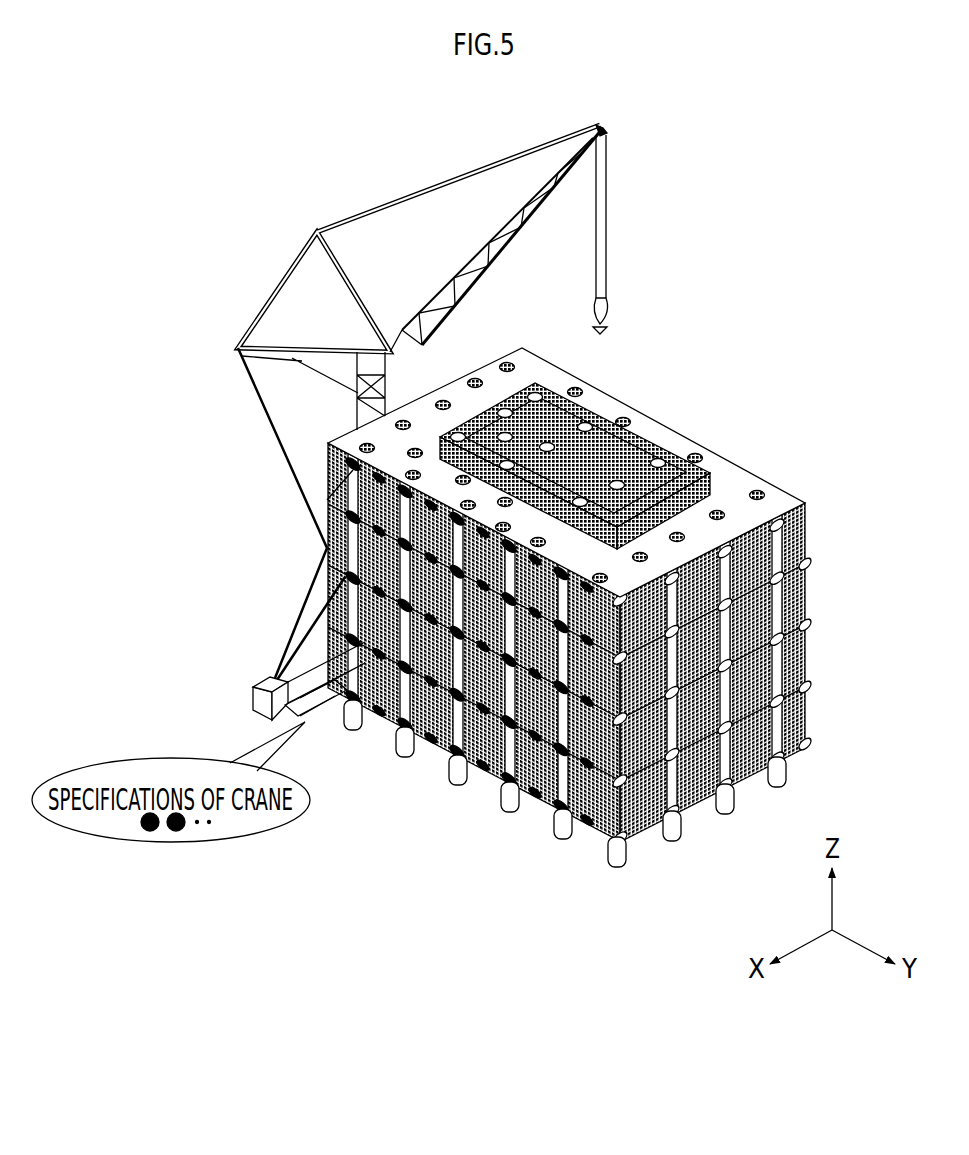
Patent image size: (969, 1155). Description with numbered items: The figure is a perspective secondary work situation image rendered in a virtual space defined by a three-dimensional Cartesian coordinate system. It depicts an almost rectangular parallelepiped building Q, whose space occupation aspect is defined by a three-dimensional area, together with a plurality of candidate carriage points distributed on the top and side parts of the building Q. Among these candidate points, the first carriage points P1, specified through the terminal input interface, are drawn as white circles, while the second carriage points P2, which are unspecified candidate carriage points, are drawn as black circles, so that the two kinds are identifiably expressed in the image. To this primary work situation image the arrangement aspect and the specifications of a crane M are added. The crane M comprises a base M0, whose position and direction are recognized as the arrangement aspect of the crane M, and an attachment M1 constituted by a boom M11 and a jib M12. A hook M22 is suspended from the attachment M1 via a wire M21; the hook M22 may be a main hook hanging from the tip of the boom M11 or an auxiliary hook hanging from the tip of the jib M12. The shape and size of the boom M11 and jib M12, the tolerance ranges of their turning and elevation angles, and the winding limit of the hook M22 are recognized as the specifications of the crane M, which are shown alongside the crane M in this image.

The crane M is at (417, 394).
The base M0 is at (245, 678).
The attachment M1 is at (252, 252).
The boom M11 is at (335, 418).
The jib M12 is at (476, 208).
The wire M21 is at (618, 216).
The hook M22 is at (618, 322).
The building Q is at (603, 575).
The first carriage points P1 is at (808, 500).
The second carriage points P2 is at (510, 356).